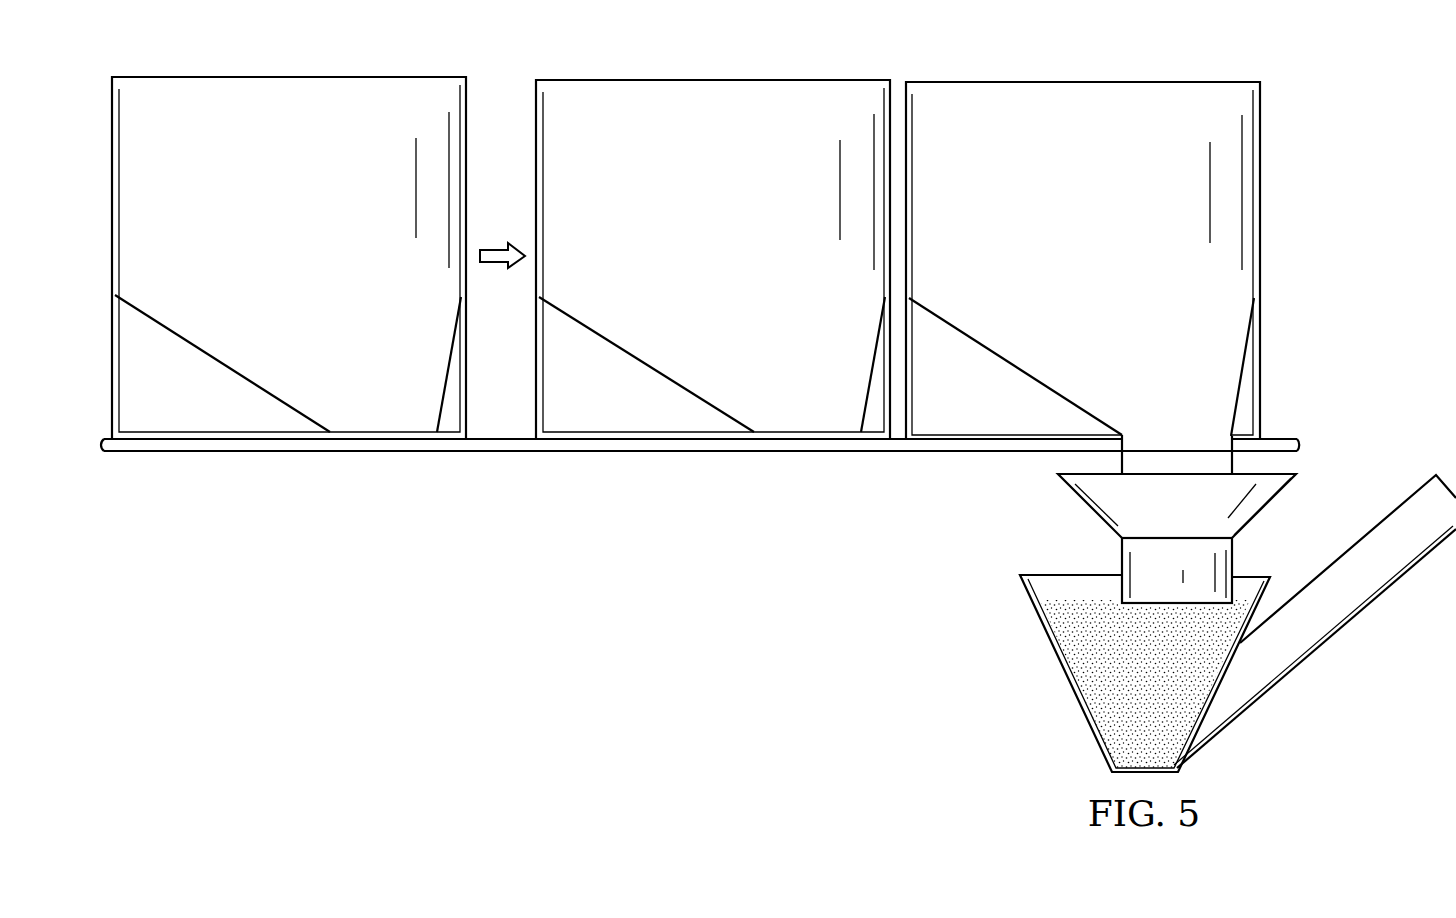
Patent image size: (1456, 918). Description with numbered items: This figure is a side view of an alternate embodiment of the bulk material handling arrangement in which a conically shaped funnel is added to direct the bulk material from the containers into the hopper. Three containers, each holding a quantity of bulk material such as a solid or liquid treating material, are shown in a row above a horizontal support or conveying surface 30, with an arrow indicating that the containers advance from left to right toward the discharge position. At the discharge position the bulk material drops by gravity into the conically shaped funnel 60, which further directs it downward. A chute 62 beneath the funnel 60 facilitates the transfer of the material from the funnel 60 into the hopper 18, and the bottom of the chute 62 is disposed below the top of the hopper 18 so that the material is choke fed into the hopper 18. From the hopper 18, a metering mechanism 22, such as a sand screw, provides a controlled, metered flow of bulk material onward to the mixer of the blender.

The conveyor 30 is at (648, 452).
The funnel 60 is at (1269, 508).
The chute 62 is at (1122, 560).
The hopper 18 is at (1087, 688).
The metering mechanism 22 is at (1393, 583).